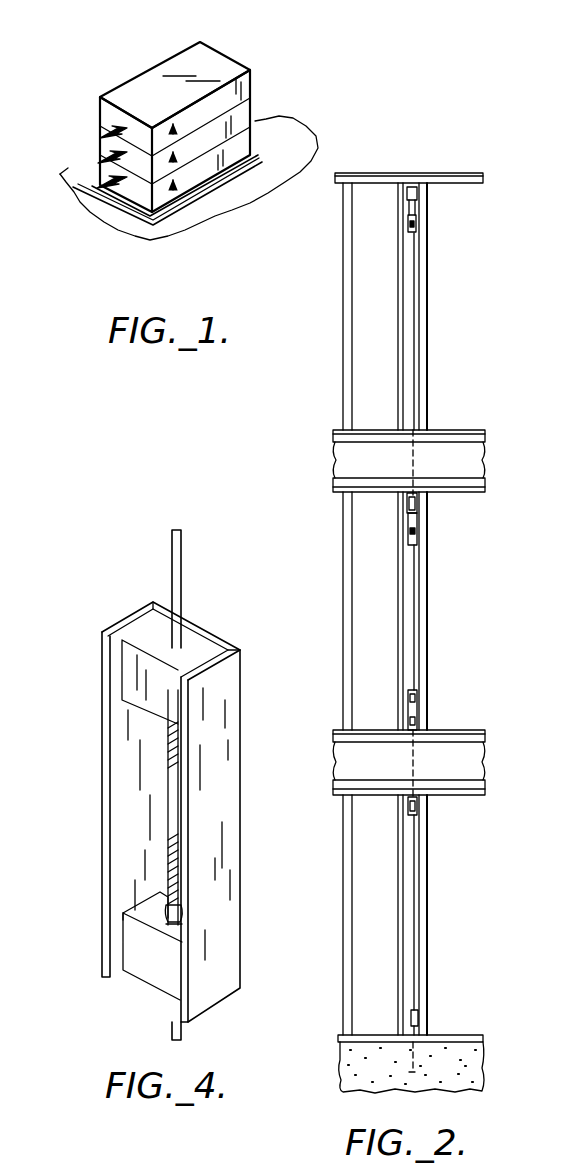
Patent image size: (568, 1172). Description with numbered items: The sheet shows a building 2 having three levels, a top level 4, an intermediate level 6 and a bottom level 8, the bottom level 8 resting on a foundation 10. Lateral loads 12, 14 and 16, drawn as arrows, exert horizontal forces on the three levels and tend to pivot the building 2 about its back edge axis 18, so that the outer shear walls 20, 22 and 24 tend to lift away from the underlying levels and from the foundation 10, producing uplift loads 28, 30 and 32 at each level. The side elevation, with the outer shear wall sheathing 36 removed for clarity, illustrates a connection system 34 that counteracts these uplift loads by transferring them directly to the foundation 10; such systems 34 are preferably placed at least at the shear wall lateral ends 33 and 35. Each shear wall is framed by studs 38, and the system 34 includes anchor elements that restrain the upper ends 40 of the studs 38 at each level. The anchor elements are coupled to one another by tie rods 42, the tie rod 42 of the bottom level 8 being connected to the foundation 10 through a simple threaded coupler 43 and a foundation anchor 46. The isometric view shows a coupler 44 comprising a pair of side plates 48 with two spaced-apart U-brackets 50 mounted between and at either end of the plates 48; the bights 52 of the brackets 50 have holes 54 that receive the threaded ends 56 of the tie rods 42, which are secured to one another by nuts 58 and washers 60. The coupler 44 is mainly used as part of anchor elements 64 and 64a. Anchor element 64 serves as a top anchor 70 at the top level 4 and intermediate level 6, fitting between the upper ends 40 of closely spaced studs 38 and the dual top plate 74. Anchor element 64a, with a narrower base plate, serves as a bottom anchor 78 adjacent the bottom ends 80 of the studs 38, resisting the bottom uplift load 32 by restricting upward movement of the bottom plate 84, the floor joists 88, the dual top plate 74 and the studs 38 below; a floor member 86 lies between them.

In FIG. 1, the building 2 is at (242, 46).
In FIG. 1, the top level 4 is at (244, 97).
In FIG. 2, the top level 4 is at (485, 396).
In FIG. 1, the intermediate level 6 is at (244, 118).
In FIG. 2, the intermediate level 6 is at (480, 619).
In FIG. 1, the bottom level 8 is at (251, 147).
In FIG. 2, the bottom level 8 is at (465, 875).
In FIG. 1, the foundation 10 is at (227, 170).
In FIG. 2, the foundation 10 is at (466, 1068).
In FIG. 1, the lateral load 12 is at (100, 137).
In FIG. 1, the lateral load 14 is at (98, 162).
In FIG. 1, the lateral load 16 is at (97, 187).
In FIG. 1, the back edge axis 18 is at (301, 182).
In FIG. 1, the outer shear wall 20 is at (192, 118).
In FIG. 1, the outer shear wall 22 is at (203, 133).
In FIG. 1, the outer shear wall 24 is at (197, 172).
In FIG. 1, the uplift load 28 is at (165, 123).
In FIG. 1, the uplift load 30 is at (125, 206).
In FIG. 1, the bottom uplift load 32 is at (157, 194).
In FIG. 1, the shear wall lateral end 33 is at (125, 119).
In FIG. 2, the connection system 34 is at (465, 335).
In FIG. 1, the shear wall lateral end 35 is at (248, 74).
In FIG. 1, the outer shear wall sheathing 36 is at (207, 172).
In FIG. 2, the studs 38 is at (418, 279).
In FIG. 2, the upper ends of studs 40 is at (427, 188).
In FIG. 2, the tie rods 42 is at (416, 586).
In FIG. 4, the tie rods 42 is at (181, 570).
In FIG. 2, the threaded coupler 43 is at (424, 1015).
In FIG. 4, the coupler 44 is at (216, 708).
In FIG. 2, the foundation anchor 46 is at (424, 1055).
In FIG. 4, the side plates 48 is at (122, 786).
In FIG. 4, the U-brackets 50 is at (130, 678).
In FIG. 4, the bights 52 is at (150, 912).
In FIG. 4, the holes 54 is at (182, 925).
In FIG. 4, the threaded ends 56 is at (168, 750).
In FIG. 4, the nuts 58 is at (180, 910).
In FIG. 4, the washers 60 is at (167, 927).
In FIG. 2, the anchor element 64 is at (418, 549).
In FIG. 2, the anchor element 64a is at (417, 690).
In FIG. 2, the top anchor 70 is at (460, 229).
In FIG. 2, the dual top plate 74 is at (497, 795).
In FIG. 2, the bottom anchor 78 is at (548, 663).
In FIG. 2, the bottom ends of studs 80 is at (427, 728).
In FIG. 2, the bottom plate 84 is at (478, 737).
In FIG. 2, the floor joist 86 is at (488, 749).
In FIG. 2, the floor joists 88 is at (480, 769).